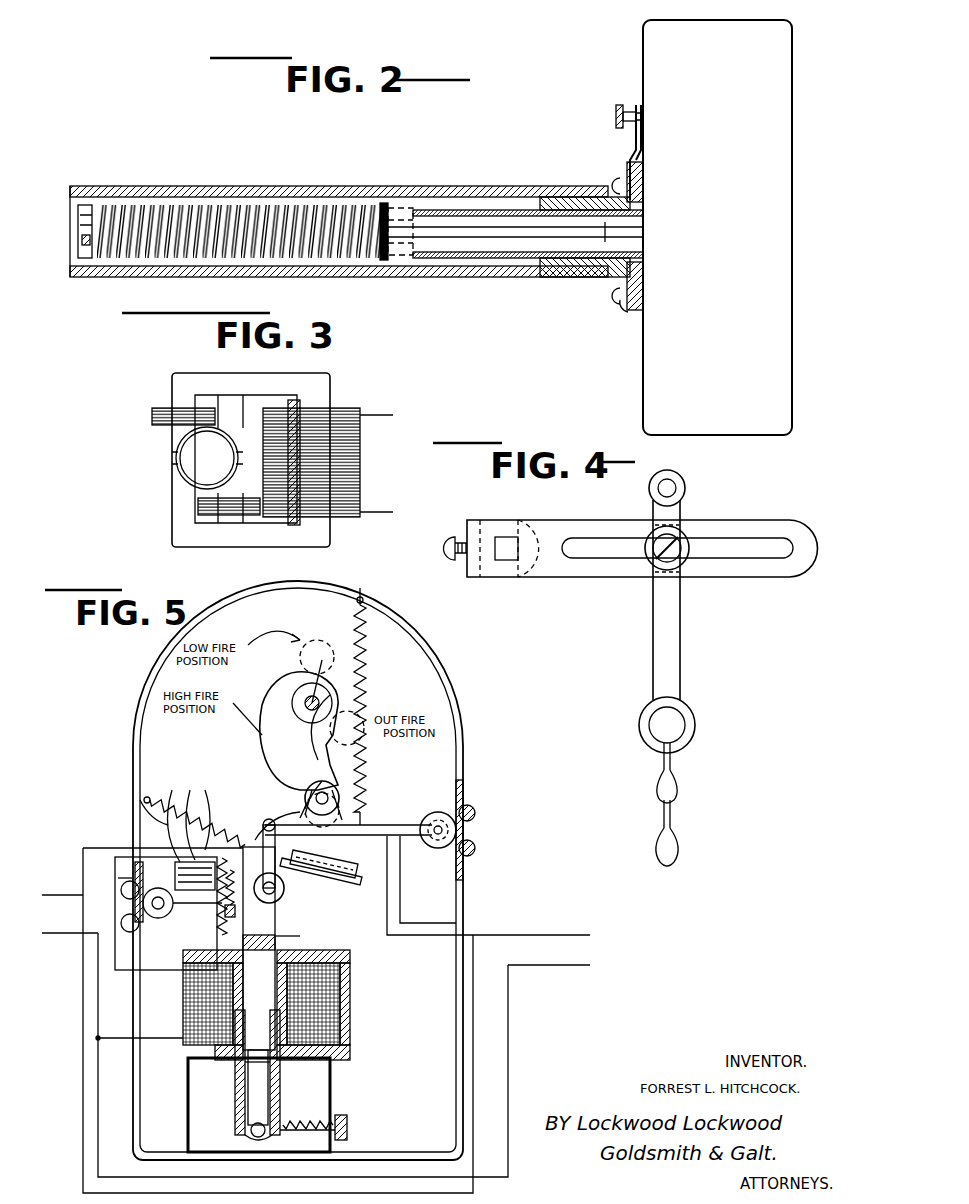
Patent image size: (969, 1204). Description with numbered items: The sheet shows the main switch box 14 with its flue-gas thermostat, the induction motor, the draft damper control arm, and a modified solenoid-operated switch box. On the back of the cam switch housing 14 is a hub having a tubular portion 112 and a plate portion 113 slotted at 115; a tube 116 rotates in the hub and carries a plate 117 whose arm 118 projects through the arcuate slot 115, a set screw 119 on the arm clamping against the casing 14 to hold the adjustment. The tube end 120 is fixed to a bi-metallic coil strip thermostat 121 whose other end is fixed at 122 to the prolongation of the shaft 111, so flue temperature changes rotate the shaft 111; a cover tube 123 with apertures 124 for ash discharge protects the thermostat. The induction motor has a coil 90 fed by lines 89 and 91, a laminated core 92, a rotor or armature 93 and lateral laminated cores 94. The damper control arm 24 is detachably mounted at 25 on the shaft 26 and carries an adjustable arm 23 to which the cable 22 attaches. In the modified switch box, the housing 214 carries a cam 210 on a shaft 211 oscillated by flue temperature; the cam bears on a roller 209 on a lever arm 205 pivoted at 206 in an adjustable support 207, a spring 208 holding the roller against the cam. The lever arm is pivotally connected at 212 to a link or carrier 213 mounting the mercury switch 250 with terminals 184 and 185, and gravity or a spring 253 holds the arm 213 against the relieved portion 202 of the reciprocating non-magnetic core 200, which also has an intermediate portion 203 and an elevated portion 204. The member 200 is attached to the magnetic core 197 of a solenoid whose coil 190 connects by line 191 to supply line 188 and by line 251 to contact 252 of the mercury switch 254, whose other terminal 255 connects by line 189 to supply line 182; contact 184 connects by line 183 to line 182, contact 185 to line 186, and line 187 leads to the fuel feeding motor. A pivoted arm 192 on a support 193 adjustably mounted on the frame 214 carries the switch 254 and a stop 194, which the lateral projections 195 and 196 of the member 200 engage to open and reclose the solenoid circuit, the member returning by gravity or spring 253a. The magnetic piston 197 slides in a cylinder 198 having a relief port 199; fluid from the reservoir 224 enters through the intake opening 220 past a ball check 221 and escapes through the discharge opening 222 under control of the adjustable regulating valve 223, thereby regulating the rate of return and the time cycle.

In FIG. 2, the main switch box 14 is at (778, 356).
In FIG. 2, the shaft 111 is at (264, 222).
In FIG. 2, the tubular portion 112 is at (586, 277).
In FIG. 2, the plate portion 113 is at (632, 312).
In FIG. 2, the slot 115 is at (634, 164).
In FIG. 2, the tube 116 is at (505, 210).
In FIG. 2, the plate 117 is at (643, 272).
In FIG. 2, the arm 118 is at (643, 184).
In FIG. 2, the set screw 119 is at (615, 116).
In FIG. 2, the tube end 120 is at (386, 206).
In FIG. 2, the bi-metallic coil strip thermostat 121 is at (338, 205).
In FIG. 2, the thermostat anchorage 122 is at (80, 240).
In FIG. 2, the cover tube 123 is at (444, 277).
In FIG. 2, the apertures 124 is at (157, 186).
In FIG. 3, the line 89 is at (374, 413).
In FIG. 3, the coil 90 is at (362, 458).
In FIG. 3, the line 91 is at (372, 514).
In FIG. 3, the laminated core 92 is at (310, 385).
In FIG. 3, the rotor 93 is at (190, 459).
In FIG. 3, the lateral laminated cores 94 is at (160, 410).
In FIG. 4, the cable 22 is at (680, 790).
In FIG. 4, the adjustable arm 23 is at (682, 620).
In FIG. 4, the arm 24 is at (566, 573).
In FIG. 4, the detachable mounting 25 is at (457, 565).
In FIG. 4, the shaft 26 is at (506, 558).
In FIG. 5, the supply line 182 is at (50, 894).
In FIG. 5, the line 183 is at (442, 923).
In FIG. 5, the mercury switch contact 184 is at (265, 820).
In FIG. 5, the mercury switch contact 185 is at (300, 812).
In FIG. 5, the line 186 is at (542, 935).
In FIG. 5, the line 187 is at (534, 966).
In FIG. 5, the supply line 188 is at (58, 934).
In FIG. 5, the line 189 is at (106, 847).
In FIG. 5, the coil 190 is at (350, 1006).
In FIG. 5, the line 191 is at (157, 1038).
In FIG. 5, the pivoted arm 192 is at (168, 917).
In FIG. 5, the support 193 is at (152, 925).
In FIG. 5, the stop member 194 is at (226, 910).
In FIG. 5, the lateral projection 195 is at (248, 950).
In FIG. 5, the lateral projection 196 is at (207, 790).
In FIG. 5, the magnetic core 197 is at (285, 1092).
In FIG. 5, the cylinder 198 is at (236, 1098).
In FIG. 5, the relief port 199 is at (282, 1066).
In FIG. 5, the reciprocating member 200 is at (276, 938).
In FIG. 5, the relieved portion 202 is at (244, 842).
In FIG. 5, the intermediate portion 203 is at (221, 938).
In FIG. 5, the elevated portion 204 is at (300, 936).
In FIG. 5, the lever arm 205 is at (389, 822).
In FIG. 5, the pivot 206 is at (430, 842).
In FIG. 5, the support 207 is at (456, 850).
In FIG. 5, the spring 208 is at (364, 712).
In FIG. 5, the roller 209 is at (342, 796).
In FIG. 5, the cam 210 is at (278, 690).
In FIG. 5, the shaft 211 is at (313, 698).
In FIG. 5, the pivotal connection 212 is at (265, 830).
In FIG. 5, the link 213 is at (286, 880).
In FIG. 5, the housing 214 is at (463, 796).
In FIG. 5, the intake opening 220 is at (250, 1140).
In FIG. 5, the ball check 221 is at (292, 1122).
In FIG. 5, the discharge opening 222 is at (300, 1134).
In FIG. 5, the adjustable regulating valve 223 is at (350, 1126).
In FIG. 5, the reservoir 224 is at (188, 1093).
In FIG. 5, the mercury control switch 250 is at (356, 880).
In FIG. 5, the line 251 is at (158, 972).
In FIG. 5, the mercury switch contact 252 is at (140, 800).
In FIG. 5, the spring 253 is at (190, 790).
In FIG. 5, the spring 253a is at (172, 974).
In FIG. 5, the mercury switch 254 is at (120, 876).
In FIG. 5, the terminal 255 is at (172, 790).